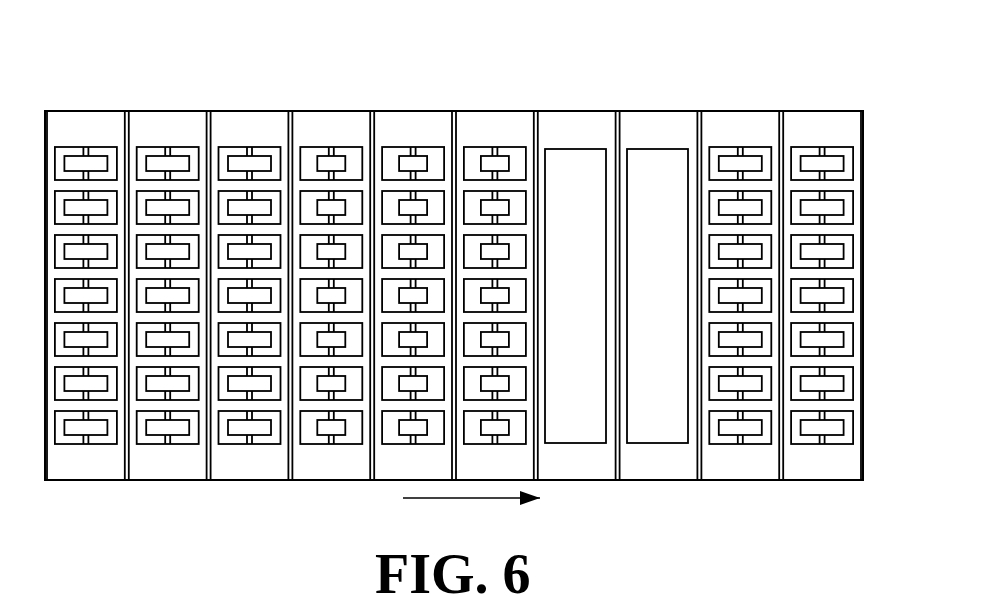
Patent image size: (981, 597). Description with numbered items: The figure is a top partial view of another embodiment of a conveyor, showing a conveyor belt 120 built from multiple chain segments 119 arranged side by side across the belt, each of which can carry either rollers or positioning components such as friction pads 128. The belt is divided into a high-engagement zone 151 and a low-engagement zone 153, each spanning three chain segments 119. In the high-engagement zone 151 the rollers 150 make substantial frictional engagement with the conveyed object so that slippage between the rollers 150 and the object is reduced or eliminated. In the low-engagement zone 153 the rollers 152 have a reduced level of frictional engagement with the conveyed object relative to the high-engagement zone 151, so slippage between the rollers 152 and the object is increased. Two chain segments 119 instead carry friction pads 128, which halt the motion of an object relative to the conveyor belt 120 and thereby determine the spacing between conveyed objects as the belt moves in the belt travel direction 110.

The belt travel direction 110 is at (467, 502).
The chain segments 119 is at (807, 122).
The conveyor belt 120 is at (644, 100).
The friction pads 128 is at (560, 187).
The rollers 150 is at (177, 440).
The high-engagement zone 151 is at (166, 290).
The rollers 152 is at (315, 438).
The low-engagement zone 153 is at (412, 291).